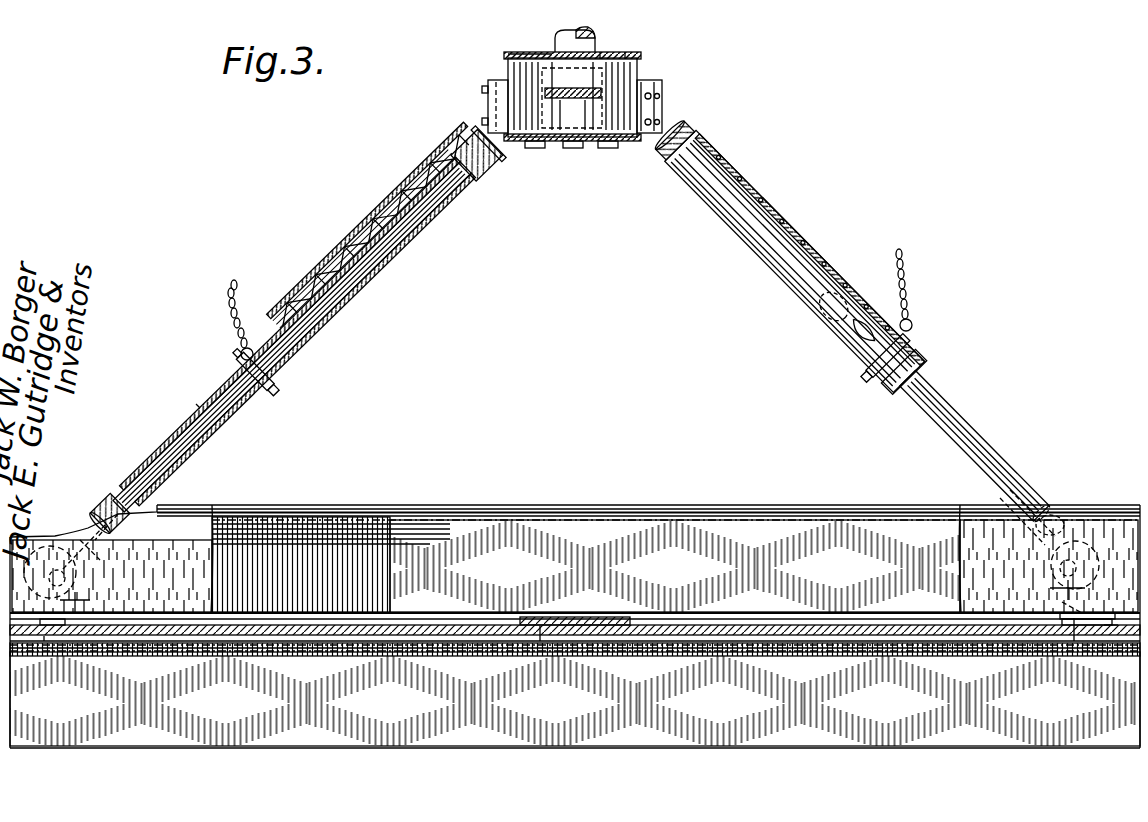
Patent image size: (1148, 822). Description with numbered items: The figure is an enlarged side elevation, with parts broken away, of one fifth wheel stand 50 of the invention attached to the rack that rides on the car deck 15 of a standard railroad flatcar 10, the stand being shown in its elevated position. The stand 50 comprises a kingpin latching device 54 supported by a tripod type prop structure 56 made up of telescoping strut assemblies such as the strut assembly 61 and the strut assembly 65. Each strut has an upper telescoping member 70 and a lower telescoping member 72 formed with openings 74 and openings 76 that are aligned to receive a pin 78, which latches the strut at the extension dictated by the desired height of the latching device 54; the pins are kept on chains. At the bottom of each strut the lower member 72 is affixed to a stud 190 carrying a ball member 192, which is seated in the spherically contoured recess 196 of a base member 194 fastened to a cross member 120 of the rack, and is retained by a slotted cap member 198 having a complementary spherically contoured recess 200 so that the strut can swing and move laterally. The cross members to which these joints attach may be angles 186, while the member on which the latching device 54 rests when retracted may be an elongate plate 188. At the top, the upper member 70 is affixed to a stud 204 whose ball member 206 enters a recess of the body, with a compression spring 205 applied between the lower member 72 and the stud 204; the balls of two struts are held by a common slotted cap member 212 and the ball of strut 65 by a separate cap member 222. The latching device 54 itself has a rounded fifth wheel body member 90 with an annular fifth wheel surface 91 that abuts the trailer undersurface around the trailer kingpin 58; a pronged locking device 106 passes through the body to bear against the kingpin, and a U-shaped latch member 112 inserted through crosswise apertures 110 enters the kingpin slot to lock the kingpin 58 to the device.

The railroad flatcar 10 is at (238, 748).
The car deck 15 is at (358, 637).
The stand 50 is at (795, 174).
The latching device 54 is at (640, 70).
The tripod type prop structure 56 is at (730, 168).
The trailer kingpin 58 is at (553, 38).
The strut assembly 61 is at (864, 337).
The strut assembly 65 is at (354, 235).
The upper telescoping member 70 is at (385, 210).
The lower telescoping member 72 is at (122, 486).
The openings 74 is at (430, 176).
The openings 76 is at (196, 404).
The pin 78 is at (255, 371).
The fifth wheel body member 90 is at (620, 58).
The annular fifth wheel surface 91 is at (508, 54).
The pronged locking device 106 is at (590, 149).
The apertures 110 is at (545, 98).
The U-shaped latch member 112 is at (576, 96).
The cross member 120 is at (44, 636).
The angle 186 is at (62, 626).
The elongate plate 188 is at (620, 626).
The stud 190 is at (163, 504).
The ball member 192 is at (62, 552).
The base member 194 is at (1110, 625).
The spherically contoured recess 196 is at (1062, 602).
The cap member 198 is at (76, 605).
The spherically contoured recess 200 is at (68, 580).
The stud 204 is at (477, 155).
The compression spring 205 is at (371, 231).
The ball member 206 is at (488, 100).
The common cap member 212 is at (665, 104).
The cap member 222 is at (494, 80).